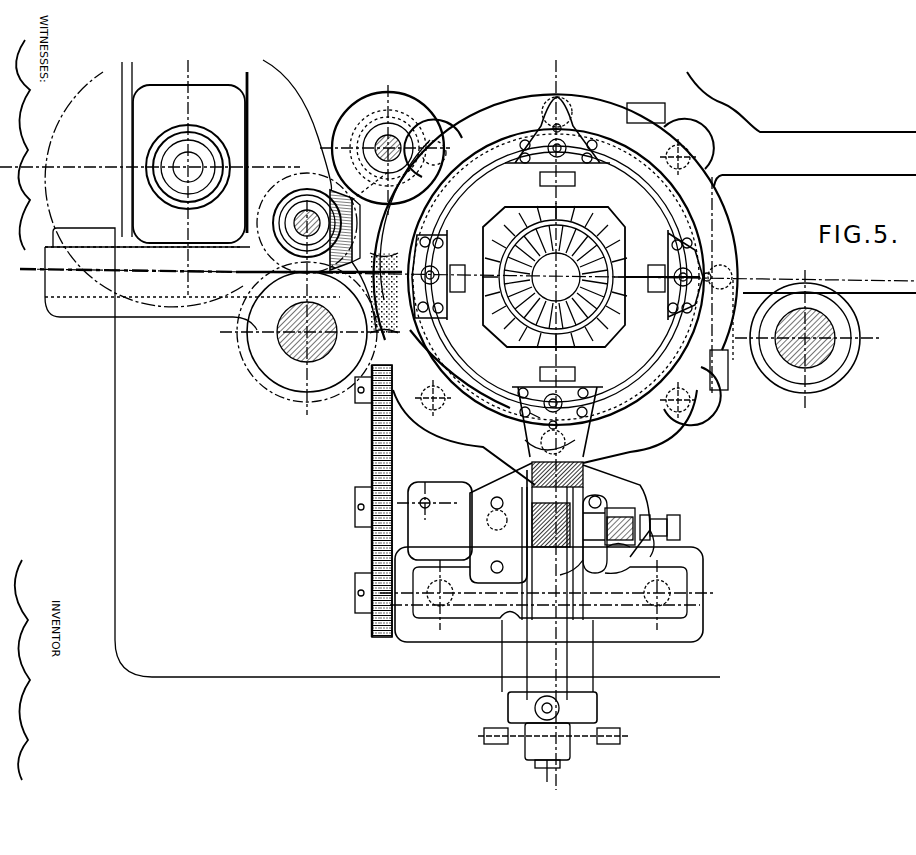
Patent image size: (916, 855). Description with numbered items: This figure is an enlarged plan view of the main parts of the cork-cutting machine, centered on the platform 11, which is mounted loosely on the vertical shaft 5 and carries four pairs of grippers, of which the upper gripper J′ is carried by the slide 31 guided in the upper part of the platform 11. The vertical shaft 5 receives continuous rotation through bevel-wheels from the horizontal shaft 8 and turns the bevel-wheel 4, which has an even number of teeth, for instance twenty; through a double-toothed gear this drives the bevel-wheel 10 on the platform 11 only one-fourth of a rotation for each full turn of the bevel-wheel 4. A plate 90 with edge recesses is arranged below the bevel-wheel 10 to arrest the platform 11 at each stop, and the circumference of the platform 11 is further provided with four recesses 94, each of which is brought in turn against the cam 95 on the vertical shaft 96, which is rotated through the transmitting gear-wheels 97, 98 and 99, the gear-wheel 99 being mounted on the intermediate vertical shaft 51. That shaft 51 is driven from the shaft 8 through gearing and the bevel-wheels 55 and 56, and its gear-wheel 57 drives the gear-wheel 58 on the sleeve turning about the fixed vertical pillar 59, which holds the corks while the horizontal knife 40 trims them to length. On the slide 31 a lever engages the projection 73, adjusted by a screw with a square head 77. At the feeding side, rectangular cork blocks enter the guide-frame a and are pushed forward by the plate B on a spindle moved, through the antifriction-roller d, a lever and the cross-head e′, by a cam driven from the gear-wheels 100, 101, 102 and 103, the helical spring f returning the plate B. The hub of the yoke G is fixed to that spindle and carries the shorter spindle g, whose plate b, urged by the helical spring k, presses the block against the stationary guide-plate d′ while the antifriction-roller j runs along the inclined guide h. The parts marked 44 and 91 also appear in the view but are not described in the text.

The bevel-wheel 4 is at (556, 277).
The vertical shaft 5 is at (556, 277).
The horizontal shaft 8 is at (80, 295).
The bevel-wheel 10 is at (662, 277).
The platform 11 is at (645, 278).
The slide 31 is at (555, 278).
The horizontal knife 40 is at (66, 205).
The bearing 44 is at (188, 167).
The intermediate vertical shaft 51 is at (307, 205).
The bevel-wheel 55 is at (330, 196).
The bevel-wheel 56 is at (274, 194).
The gear-wheel 57 is at (289, 232).
The gear-wheel 58 is at (252, 375).
The fixed vertical pillar 59 is at (328, 330).
The projection 73 is at (542, 175).
The square head 77 is at (556, 276).
The plate 90 is at (617, 217).
The armature ring 91 is at (625, 245).
The recesses 94 is at (690, 385).
The cam 95 is at (427, 103).
The vertical shaft 96 is at (390, 137).
The transmitting gear-wheel 97 is at (389, 170).
The transmitting gear-wheel 98 is at (340, 190).
The transmitting gear-wheel 99 is at (310, 208).
The gear-wheel 100 is at (370, 563).
The gear-wheel 101 is at (371, 462).
The gear-wheel 102 is at (371, 423).
The gear-wheel 103 is at (371, 367).
The upper gripper J′ is at (558, 110).
The plate B is at (549, 552).
The yoke G is at (577, 562).
The guide-frame a is at (551, 525).
The plate b is at (589, 503).
The antifriction-roller d is at (547, 581).
The stationary guide-plate d′ is at (527, 527).
The cross-head e′ is at (577, 448).
The helical spring f is at (533, 762).
The shorter spindle g is at (609, 517).
The inclined guide h is at (643, 492).
The antifriction-roller j is at (675, 518).
The helical spring k is at (603, 547).